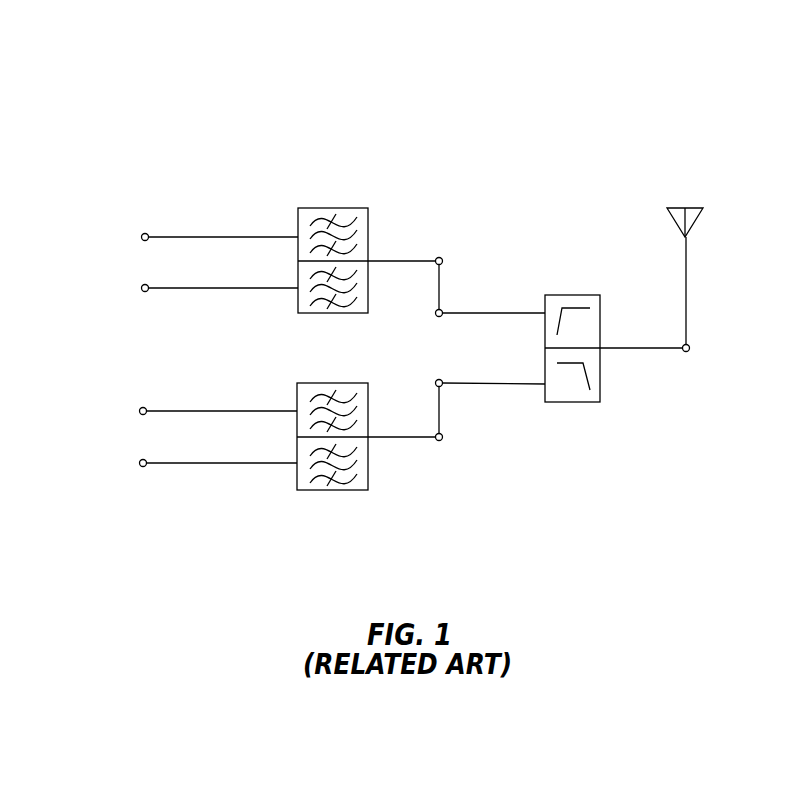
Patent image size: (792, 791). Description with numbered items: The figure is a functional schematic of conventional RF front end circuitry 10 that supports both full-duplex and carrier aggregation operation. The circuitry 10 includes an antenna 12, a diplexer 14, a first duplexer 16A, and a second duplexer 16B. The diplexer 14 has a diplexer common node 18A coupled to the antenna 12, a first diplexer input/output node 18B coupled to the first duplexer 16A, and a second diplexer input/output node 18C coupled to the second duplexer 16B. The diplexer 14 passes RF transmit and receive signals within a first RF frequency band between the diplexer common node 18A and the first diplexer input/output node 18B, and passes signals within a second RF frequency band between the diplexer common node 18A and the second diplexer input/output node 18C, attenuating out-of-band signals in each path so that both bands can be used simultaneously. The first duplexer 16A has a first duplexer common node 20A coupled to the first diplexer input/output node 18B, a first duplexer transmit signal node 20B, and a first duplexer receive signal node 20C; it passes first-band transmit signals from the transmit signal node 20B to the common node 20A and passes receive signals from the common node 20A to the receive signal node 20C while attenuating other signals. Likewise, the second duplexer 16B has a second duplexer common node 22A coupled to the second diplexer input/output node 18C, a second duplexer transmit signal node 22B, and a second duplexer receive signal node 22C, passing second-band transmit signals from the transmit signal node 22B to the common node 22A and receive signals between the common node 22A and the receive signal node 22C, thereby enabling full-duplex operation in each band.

The conventional RF front end circuitry 10 is at (454, 76).
The antenna 12 is at (692, 207).
The diplexer 14 is at (573, 402).
The first duplexer 16A is at (332, 208).
The second duplexer 16B is at (333, 490).
The diplexer common node 18A is at (689, 351).
The first diplexer input/output node 18B is at (441, 311).
The second diplexer input/output node 18C is at (441, 385).
The first duplexer common node 20A is at (441, 258).
The first duplexer transmit signal node 20B is at (141, 236).
The first duplexer receive signal node 20C is at (141, 287).
The second duplexer common node 22A is at (441, 440).
The second duplexer transmit signal node 22B is at (139, 410).
The second duplexer receive signal node 22C is at (139, 462).